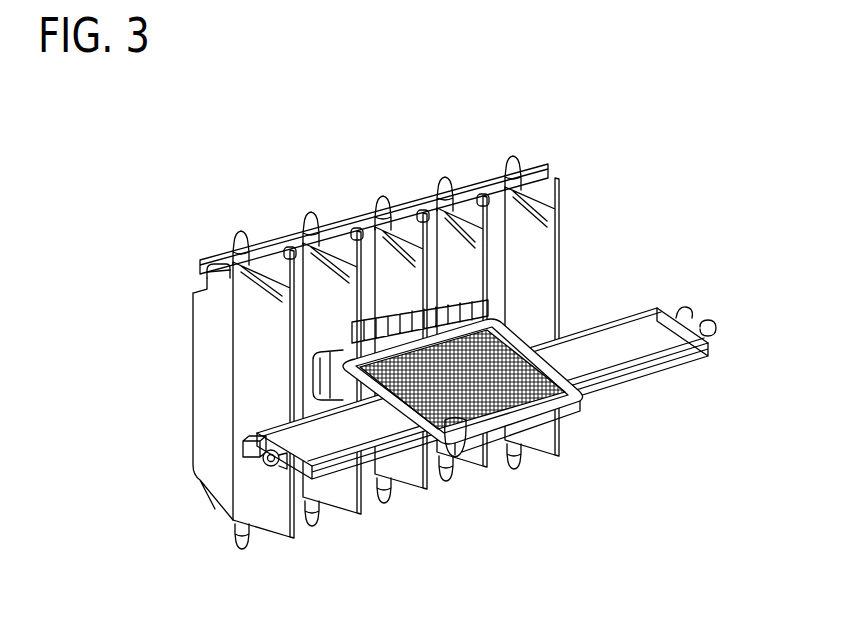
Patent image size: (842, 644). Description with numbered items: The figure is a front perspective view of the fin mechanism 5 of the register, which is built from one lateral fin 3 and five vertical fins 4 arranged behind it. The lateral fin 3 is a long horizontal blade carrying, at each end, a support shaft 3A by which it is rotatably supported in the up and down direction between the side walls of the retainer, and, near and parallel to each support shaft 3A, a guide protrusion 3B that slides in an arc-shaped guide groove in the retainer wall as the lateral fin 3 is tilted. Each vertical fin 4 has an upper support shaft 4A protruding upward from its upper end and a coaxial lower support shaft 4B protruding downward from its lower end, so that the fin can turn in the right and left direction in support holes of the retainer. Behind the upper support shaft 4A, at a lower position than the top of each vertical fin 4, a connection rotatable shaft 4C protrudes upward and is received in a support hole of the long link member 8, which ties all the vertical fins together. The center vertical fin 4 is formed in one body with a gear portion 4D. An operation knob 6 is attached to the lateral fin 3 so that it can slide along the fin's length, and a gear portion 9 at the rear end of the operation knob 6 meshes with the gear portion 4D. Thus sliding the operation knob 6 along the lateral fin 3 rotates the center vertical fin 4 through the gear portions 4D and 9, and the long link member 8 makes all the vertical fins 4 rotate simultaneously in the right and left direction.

The lateral fin 3 is at (636, 328).
The support shaft 3A is at (283, 468).
The guide protrusion 3B is at (246, 452).
The vertical fin 4 is at (533, 220).
The upper support shaft 4A is at (241, 231).
The lower support shaft 4B is at (235, 540).
The connection rotatable shaft 4C is at (212, 267).
The gear portion 4D is at (343, 323).
The fin mechanism 5 is at (626, 240).
The operation knob 6 is at (548, 428).
The long link member 8 is at (276, 247).
The gear portion 9 is at (465, 310).